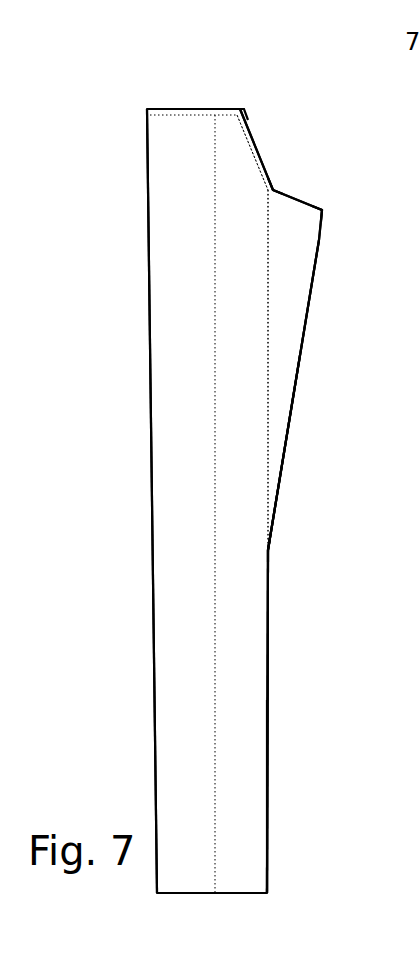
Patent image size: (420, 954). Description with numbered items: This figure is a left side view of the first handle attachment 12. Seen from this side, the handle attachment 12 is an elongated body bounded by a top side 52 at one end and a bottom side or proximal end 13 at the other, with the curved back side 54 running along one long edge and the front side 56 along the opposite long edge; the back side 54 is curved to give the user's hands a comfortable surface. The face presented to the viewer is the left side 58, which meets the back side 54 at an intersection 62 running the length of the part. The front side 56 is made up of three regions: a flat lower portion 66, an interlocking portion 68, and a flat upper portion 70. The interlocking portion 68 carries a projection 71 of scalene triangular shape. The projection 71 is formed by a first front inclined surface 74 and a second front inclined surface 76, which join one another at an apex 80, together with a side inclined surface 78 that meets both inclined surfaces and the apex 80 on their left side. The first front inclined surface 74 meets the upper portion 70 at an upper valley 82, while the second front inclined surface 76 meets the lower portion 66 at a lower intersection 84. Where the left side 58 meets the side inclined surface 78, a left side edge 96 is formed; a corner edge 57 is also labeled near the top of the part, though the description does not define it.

The handle attachment 12 is at (168, 135).
The bottom side or proximal end 13 is at (248, 895).
The top side 52 is at (187, 108).
The back side 54 is at (145, 268).
The front side 56 is at (327, 527).
The corner edge 57 is at (240, 108).
The left side 58 is at (227, 127).
The intersection 62 is at (213, 198).
The lower portion 66 is at (267, 653).
The interlocking portion 68 is at (340, 387).
The upper portion 70 is at (248, 128).
The projection 71 is at (318, 267).
The first front inclined surface 74 is at (295, 198).
The second front inclined surface 76 is at (318, 238).
The side inclined surface 78 is at (288, 290).
The apex 80 is at (322, 210).
The upper valley 82 is at (270, 190).
The lower intersection 84 is at (268, 555).
The left side edge 96 is at (268, 408).